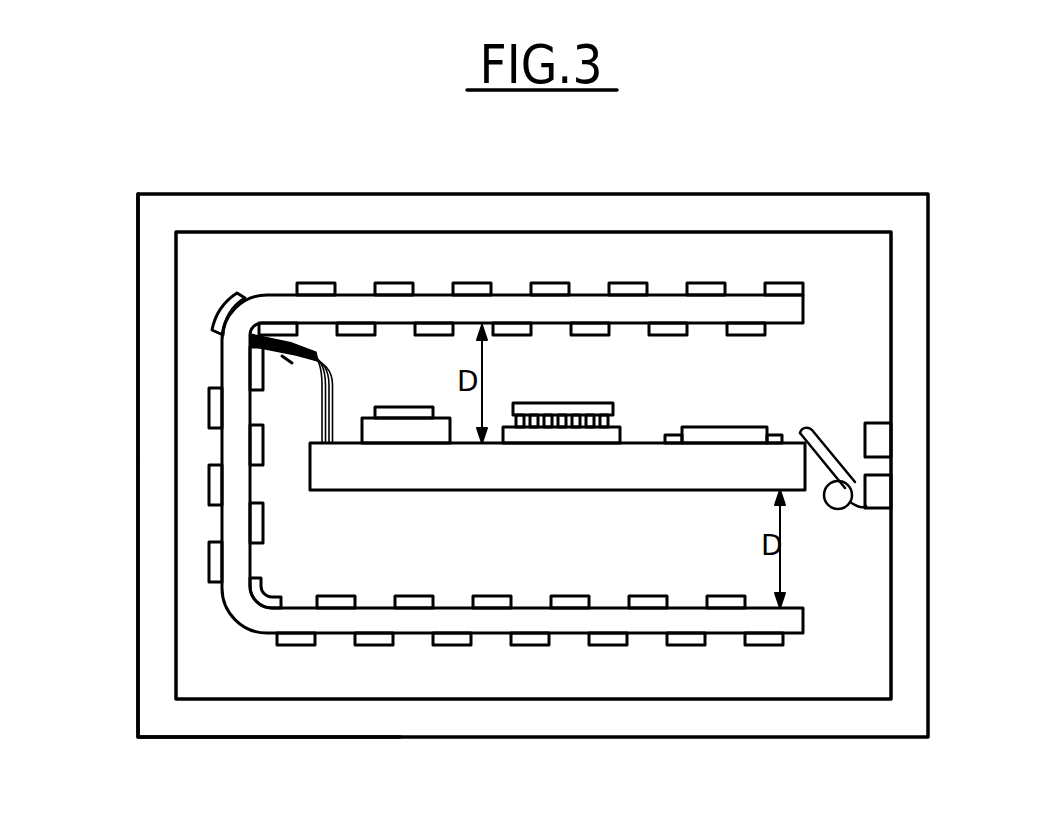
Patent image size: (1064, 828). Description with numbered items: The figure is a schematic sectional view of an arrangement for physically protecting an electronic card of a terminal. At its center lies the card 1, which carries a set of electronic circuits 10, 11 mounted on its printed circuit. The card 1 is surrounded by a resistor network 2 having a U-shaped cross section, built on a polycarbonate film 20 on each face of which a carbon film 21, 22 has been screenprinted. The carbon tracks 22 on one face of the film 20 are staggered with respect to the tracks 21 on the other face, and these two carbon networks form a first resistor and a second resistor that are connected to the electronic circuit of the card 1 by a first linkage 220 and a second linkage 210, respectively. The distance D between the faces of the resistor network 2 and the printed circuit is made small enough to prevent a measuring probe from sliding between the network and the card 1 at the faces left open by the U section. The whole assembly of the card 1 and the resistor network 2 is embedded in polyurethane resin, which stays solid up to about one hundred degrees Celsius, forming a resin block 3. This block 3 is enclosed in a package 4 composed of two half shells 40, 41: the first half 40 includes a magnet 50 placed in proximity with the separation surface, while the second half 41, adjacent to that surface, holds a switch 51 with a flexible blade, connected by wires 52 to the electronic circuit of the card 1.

The card 1 is at (604, 490).
The resistor network 2 is at (601, 532).
The resin block 3 is at (880, 686).
The package 4 is at (920, 288).
The first half shell 40 is at (152, 272).
The second half shell 41 is at (150, 668).
The electronic circuit 10 is at (731, 427).
The electronic circuit 11 is at (590, 404).
The polycarbonate film 20 is at (430, 634).
The carbon film tracks 21 is at (387, 646).
The carbon film tracks 22 is at (573, 602).
The magnet 50 is at (880, 447).
The switch 51 is at (880, 494).
The wires 52 is at (832, 511).
The second linkage 210 is at (312, 354).
The first linkage 220 is at (288, 356).